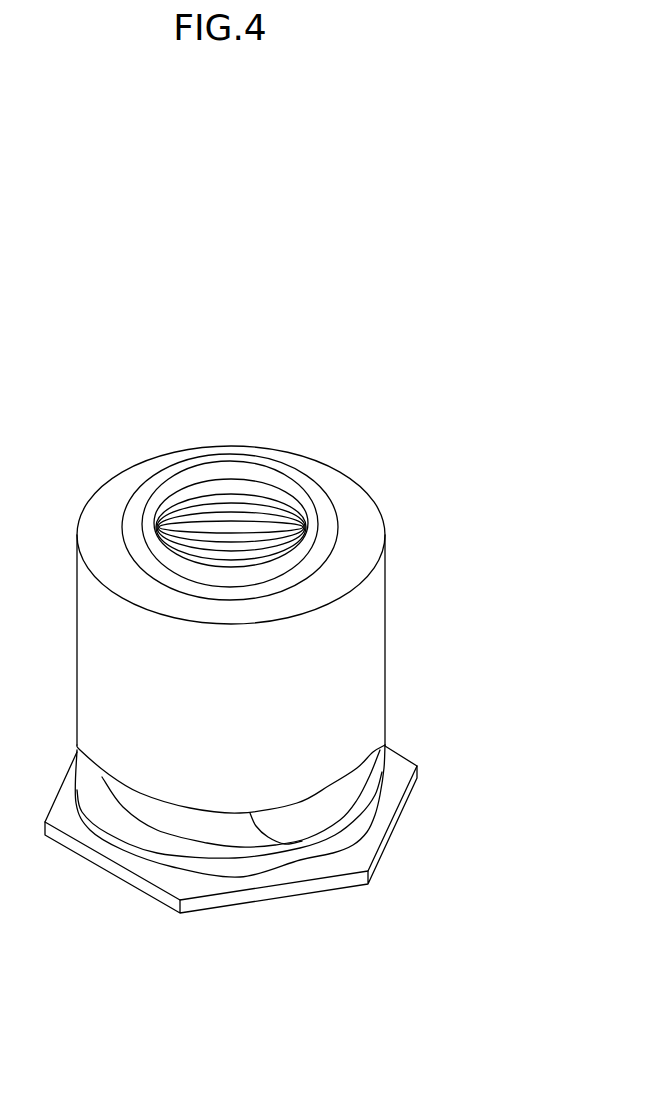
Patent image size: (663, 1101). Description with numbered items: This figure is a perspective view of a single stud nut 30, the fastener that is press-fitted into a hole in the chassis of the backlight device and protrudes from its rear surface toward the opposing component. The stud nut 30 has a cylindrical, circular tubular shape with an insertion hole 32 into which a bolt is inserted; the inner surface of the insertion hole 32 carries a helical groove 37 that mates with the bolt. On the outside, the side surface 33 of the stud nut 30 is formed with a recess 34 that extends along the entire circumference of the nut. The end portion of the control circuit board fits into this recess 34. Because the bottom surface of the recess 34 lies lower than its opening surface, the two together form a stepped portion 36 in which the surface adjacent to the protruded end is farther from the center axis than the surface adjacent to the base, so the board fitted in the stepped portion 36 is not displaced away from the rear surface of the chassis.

The stud nut 30 is at (437, 532).
The insertion hole 32 is at (308, 531).
The side surface 33 is at (368, 645).
The recess 34 is at (258, 846).
The stepped portion 36 is at (343, 792).
The helical groove 37 is at (208, 512).